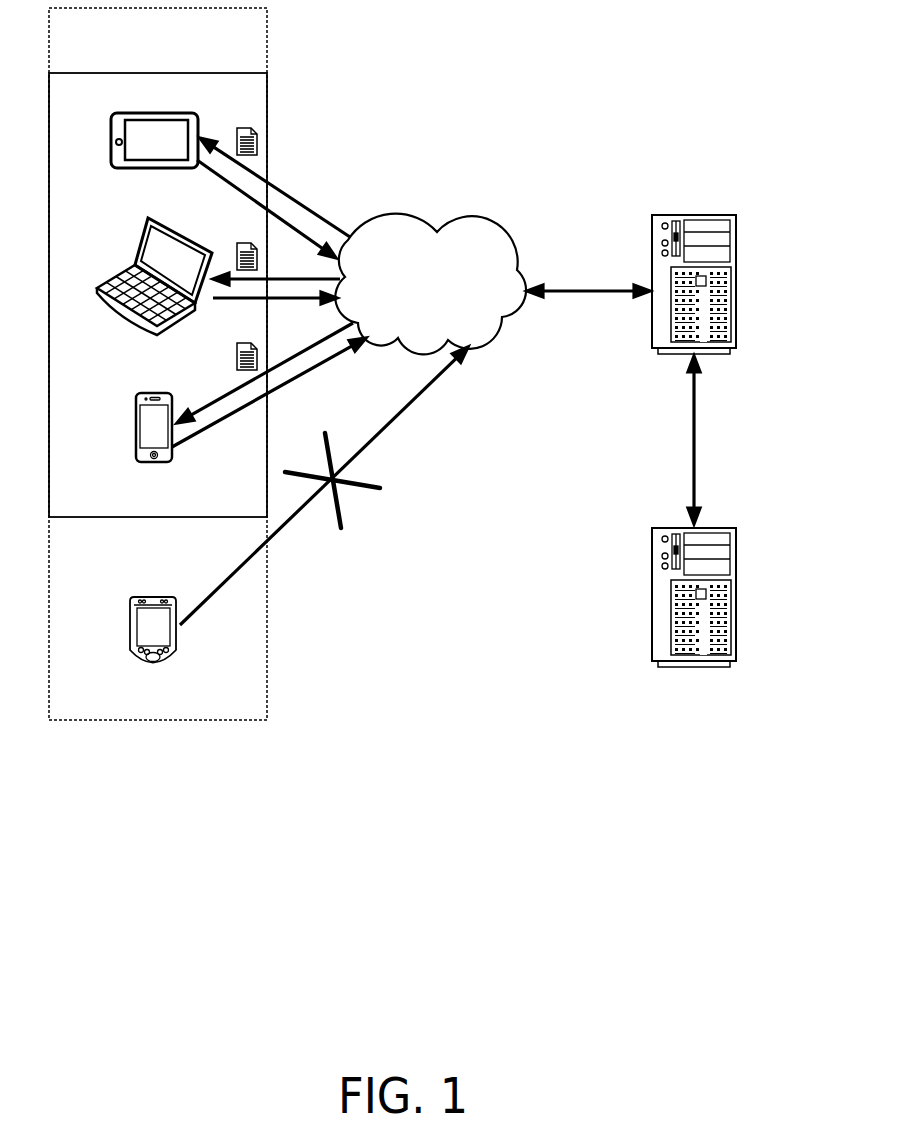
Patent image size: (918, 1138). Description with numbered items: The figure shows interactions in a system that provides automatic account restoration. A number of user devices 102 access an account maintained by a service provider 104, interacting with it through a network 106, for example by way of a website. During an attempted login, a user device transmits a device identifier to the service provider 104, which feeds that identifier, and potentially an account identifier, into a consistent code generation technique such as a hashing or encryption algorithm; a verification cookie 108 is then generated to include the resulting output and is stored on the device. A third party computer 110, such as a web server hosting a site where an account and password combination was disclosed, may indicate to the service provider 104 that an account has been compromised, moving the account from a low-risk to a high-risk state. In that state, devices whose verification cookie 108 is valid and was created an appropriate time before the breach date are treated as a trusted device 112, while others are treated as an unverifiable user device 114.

The user devices 102 is at (158, 364).
The service provider 104 is at (737, 302).
The network 106 is at (430, 284).
The verification cookie 108 is at (260, 120).
The third party computer 110 is at (737, 614).
The trusted device 112 is at (158, 295).
The unverifiable user device 114 is at (153, 592).